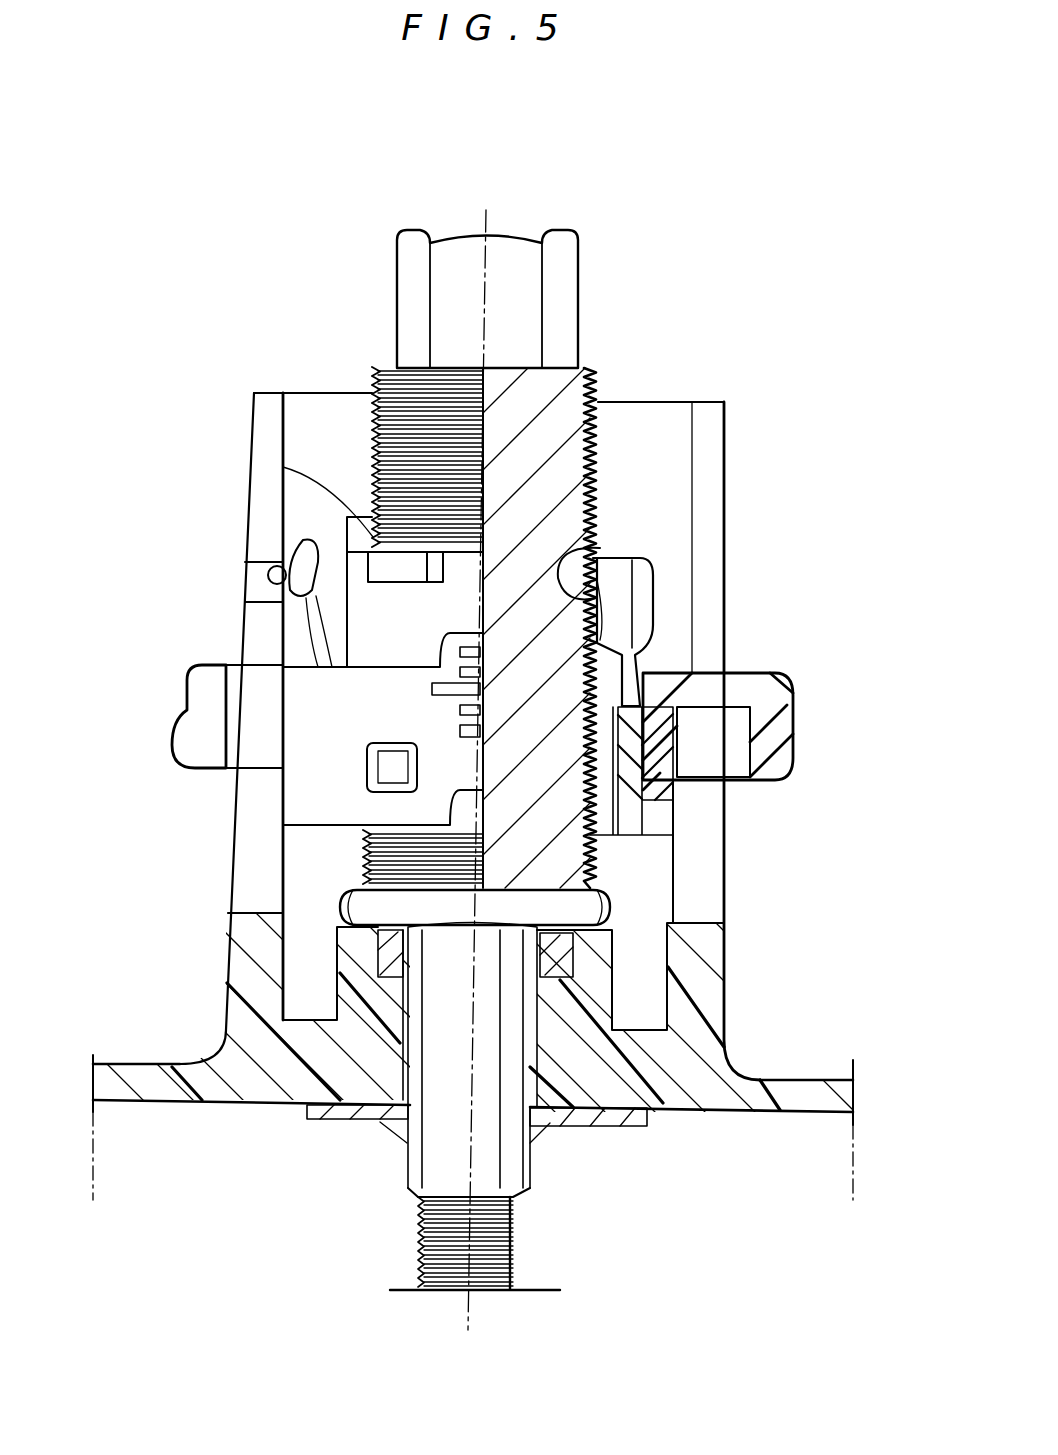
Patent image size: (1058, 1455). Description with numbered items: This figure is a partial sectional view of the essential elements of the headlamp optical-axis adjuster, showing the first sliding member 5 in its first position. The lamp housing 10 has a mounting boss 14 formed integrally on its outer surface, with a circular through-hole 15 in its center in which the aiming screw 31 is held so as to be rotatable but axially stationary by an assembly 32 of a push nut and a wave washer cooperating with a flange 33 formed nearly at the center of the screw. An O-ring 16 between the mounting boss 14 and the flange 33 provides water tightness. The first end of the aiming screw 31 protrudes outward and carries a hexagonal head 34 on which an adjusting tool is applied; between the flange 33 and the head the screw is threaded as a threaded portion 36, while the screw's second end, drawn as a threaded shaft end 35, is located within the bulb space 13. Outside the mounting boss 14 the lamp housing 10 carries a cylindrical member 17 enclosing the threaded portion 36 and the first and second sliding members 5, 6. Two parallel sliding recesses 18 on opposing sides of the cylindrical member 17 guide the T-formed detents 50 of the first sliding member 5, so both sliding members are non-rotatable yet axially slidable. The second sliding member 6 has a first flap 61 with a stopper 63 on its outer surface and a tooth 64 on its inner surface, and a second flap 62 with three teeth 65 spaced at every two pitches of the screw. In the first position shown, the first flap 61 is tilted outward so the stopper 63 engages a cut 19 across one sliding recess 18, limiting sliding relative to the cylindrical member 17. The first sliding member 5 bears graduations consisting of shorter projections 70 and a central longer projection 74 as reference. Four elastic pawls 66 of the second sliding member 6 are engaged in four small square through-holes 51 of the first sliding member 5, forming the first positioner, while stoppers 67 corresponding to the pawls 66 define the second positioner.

The first sliding member 5 is at (756, 666).
The second sliding member 6 is at (670, 617).
The lamp housing 10 is at (150, 1063).
The bulb space 13 is at (140, 1182).
The mounting boss 14 is at (355, 1077).
The circular through-hole 15 is at (505, 1060).
The O-ring 16 is at (390, 975).
The cylindrical member 17 is at (735, 845).
The sliding recesses 18 is at (700, 923).
The cut 19 is at (247, 577).
The aiming screw 31 is at (600, 248).
The assembly of a push nut and a wave washer 32 is at (620, 1112).
The flange 33 is at (343, 907).
The hexagonal head 34 is at (512, 232).
The threaded shaft end 35 is at (515, 1247).
The threaded portion 36 is at (393, 560).
The T-formed detents 50 is at (185, 677).
The small square through-holes 51 is at (363, 835).
The first flap 61 is at (300, 540).
The second flap 62 is at (655, 567).
The stopper 63 is at (268, 582).
The tooth 64 is at (347, 547).
The teeth 65 is at (580, 560).
The elastic pawls 66 is at (393, 767).
The stoppers 67 is at (277, 448).
The shorter projections 70 is at (480, 705).
The central longer projection 74 is at (440, 687).